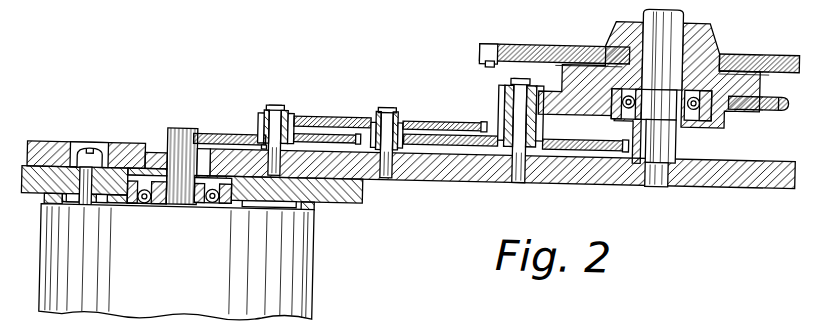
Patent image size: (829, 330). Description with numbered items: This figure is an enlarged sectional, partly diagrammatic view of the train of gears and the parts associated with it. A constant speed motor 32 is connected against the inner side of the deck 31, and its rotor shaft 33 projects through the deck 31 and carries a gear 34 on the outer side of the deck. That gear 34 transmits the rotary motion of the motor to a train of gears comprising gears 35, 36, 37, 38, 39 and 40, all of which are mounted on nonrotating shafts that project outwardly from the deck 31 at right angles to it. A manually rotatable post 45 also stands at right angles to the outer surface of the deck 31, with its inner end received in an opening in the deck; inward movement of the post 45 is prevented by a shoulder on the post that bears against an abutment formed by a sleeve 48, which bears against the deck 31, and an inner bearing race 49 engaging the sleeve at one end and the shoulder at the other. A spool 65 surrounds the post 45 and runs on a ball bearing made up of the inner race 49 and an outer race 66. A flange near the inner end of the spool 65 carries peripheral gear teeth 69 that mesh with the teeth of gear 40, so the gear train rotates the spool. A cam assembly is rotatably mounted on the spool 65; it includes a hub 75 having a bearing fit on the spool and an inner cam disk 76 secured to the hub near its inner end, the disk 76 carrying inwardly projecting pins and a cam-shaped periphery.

The deck 31 is at (462, 166).
The constant speed motor 32 is at (295, 268).
The rotor shaft 33 is at (153, 163).
The gear 34 is at (175, 132).
The gear 35 is at (215, 134).
The gear 36 is at (263, 113).
The gear 37 is at (323, 118).
The gear 38 is at (403, 121).
The gear 39 is at (438, 138).
The gear 40 is at (542, 121).
The manually rotatable post 45 is at (643, 155).
The sleeve 48 is at (688, 140).
The inner bearing race 49 is at (618, 116).
The spool 65 is at (737, 92).
The outer race 66 is at (698, 113).
The peripheral gear teeth 69 is at (783, 103).
The hub 75 is at (715, 34).
The inner cam disk 76 is at (520, 44).